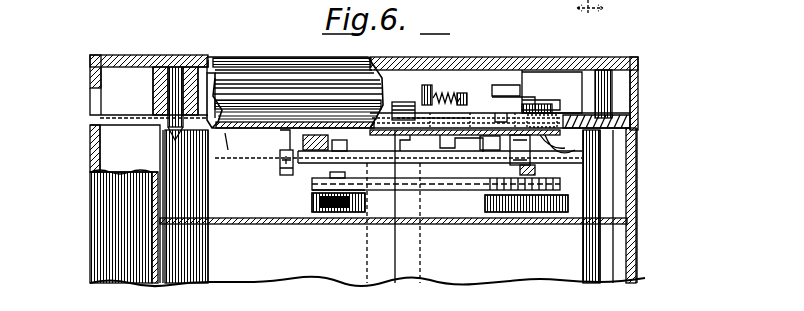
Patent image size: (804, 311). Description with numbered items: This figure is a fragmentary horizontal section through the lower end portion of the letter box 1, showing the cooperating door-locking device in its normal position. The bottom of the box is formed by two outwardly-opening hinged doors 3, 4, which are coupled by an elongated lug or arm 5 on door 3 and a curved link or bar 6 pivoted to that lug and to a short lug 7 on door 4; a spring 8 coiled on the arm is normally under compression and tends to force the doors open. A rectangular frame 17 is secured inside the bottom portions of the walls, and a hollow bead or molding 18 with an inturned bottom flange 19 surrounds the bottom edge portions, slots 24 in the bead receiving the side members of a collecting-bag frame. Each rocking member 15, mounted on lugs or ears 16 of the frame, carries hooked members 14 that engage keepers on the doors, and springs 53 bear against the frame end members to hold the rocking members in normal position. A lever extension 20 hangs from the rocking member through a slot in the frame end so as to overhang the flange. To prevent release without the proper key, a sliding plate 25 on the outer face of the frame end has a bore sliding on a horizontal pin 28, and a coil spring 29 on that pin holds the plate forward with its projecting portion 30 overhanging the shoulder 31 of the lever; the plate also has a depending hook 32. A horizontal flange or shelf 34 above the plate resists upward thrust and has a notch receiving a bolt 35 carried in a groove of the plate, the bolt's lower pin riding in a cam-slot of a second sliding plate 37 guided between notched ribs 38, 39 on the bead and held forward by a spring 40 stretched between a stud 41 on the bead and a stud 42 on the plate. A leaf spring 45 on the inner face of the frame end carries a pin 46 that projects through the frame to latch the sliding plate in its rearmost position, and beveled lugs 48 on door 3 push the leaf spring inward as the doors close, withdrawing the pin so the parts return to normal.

The letter box 1 is at (150, 283).
The hinged door 3 is at (491, 248).
The hinged door 4 is at (279, 249).
The elongated lug or arm 5 is at (490, 205).
The curved link or bar 6 is at (460, 187).
The short lug or projection 7 is at (330, 204).
The spring 8 is at (590, 17).
The hooked member 14 is at (345, 160).
The rocking member 15 is at (309, 163).
The lug or ear 16 is at (297, 147).
The rectangular frame 17 is at (163, 165).
The hollow bead or molding 18 is at (263, 77).
The inturned bottom flange 19 is at (149, 169).
The lever extension 20 is at (400, 100).
The slot 24 is at (103, 118).
The sliding plate 25 is at (557, 124).
The horizontal pin 28 is at (637, 117).
The coil spring 29 is at (604, 113).
The projecting portion 30 is at (398, 122).
The shoulder 31 is at (441, 148).
The depending hook 32 is at (488, 150).
The horizontal flange or shelf 34 is at (436, 177).
The bolt 35 is at (500, 120).
The sliding plate 37 is at (513, 110).
The notched rib 38 is at (509, 82).
The notched rib 39 is at (552, 93).
The spring 40 is at (442, 93).
The stud 41 is at (428, 85).
The stud 42 is at (461, 93).
The leaf spring 45 is at (548, 140).
The pin 46 is at (515, 150).
The lug 48 is at (537, 168).
The spring 53 is at (271, 169).